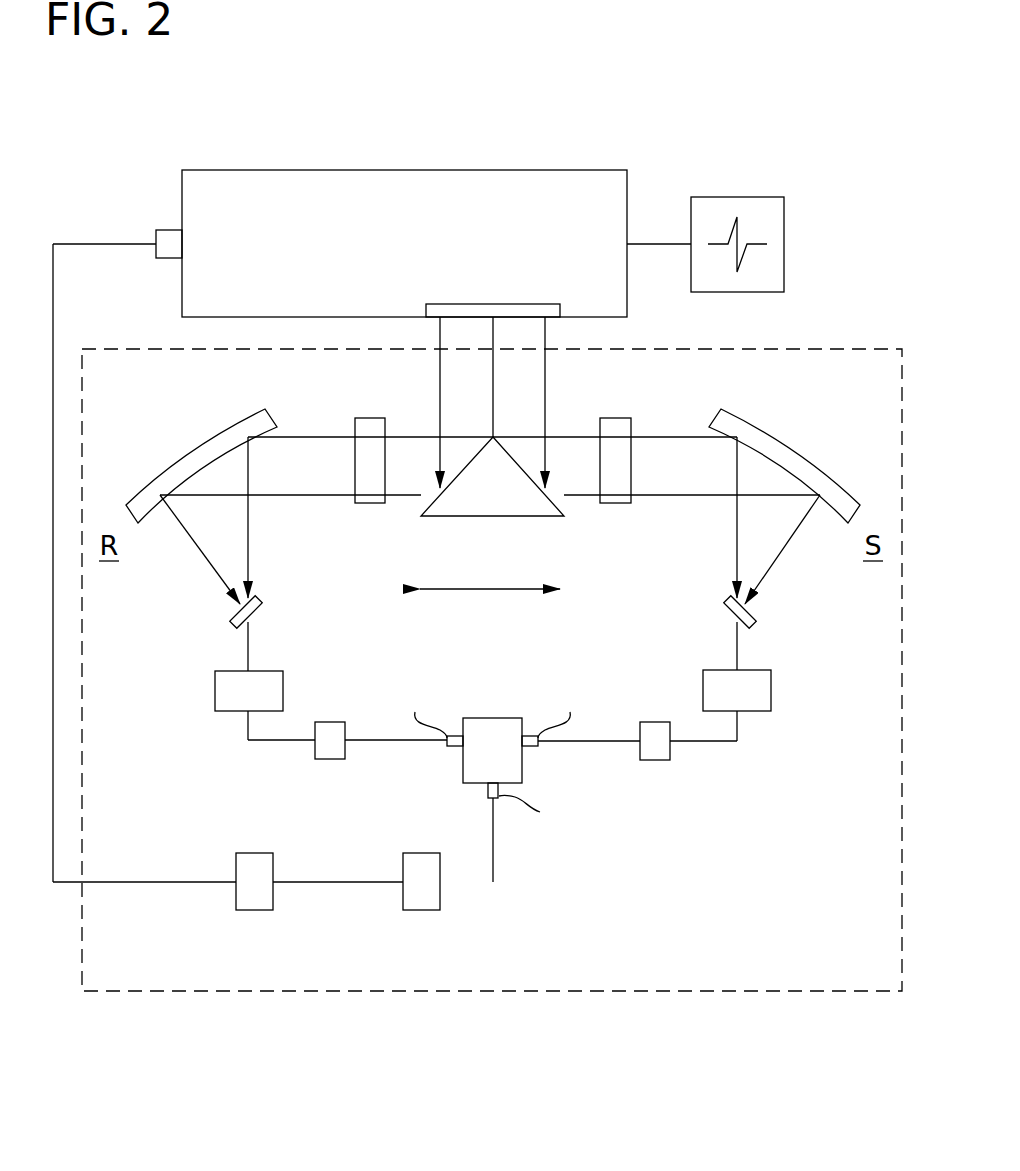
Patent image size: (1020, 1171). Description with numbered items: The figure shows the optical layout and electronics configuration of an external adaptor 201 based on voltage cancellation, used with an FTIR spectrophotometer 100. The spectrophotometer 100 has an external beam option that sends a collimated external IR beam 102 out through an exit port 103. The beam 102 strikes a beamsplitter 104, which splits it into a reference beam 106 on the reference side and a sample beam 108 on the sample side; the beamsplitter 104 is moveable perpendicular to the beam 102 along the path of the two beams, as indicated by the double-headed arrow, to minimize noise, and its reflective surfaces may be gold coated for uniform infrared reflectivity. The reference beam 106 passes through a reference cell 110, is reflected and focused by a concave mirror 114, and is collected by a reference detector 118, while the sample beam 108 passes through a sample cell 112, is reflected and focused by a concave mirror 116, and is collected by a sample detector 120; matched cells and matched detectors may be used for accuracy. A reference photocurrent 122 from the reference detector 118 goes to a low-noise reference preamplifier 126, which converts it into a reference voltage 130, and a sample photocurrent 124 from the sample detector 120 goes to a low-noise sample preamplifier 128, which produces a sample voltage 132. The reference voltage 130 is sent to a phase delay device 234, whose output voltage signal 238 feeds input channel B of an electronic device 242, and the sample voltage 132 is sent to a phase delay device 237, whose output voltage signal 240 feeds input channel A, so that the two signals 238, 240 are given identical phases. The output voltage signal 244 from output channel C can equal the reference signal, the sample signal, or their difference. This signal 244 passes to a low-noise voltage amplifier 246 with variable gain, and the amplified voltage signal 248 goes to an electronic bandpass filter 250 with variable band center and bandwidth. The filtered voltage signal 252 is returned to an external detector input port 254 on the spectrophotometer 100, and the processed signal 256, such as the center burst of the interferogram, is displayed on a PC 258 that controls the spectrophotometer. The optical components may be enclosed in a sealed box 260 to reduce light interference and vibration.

The FTIR spectrophotometer 100 is at (390, 183).
The exit port 103 is at (498, 304).
The external IR beam 102 is at (516, 424).
The beamsplitter 104 is at (470, 508).
The reference beam 106 is at (415, 486).
The sample beam 108 is at (570, 486).
The reference cell 110 is at (366, 418).
The sample cell 112 is at (622, 418).
The concave mirror 114 is at (203, 458).
The concave mirror 116 is at (782, 458).
The reference detector 118 is at (228, 626).
The sample detector 120 is at (760, 626).
The reference photocurrent 122 is at (250, 650).
The sample photocurrent 124 is at (735, 647).
The reference preamplifier 126 is at (215, 690).
The sample preamplifier 128 is at (771, 690).
The reference voltage 130 is at (287, 742).
The sample voltage 132 is at (695, 743).
The phase delay device 234 is at (333, 760).
The phase delay device 237 is at (655, 761).
The output voltage signal 238 is at (380, 740).
The output voltage signal 240 is at (600, 741).
The electronic device 242 is at (463, 762).
The output voltage signal 244 is at (495, 852).
The voltage amplifier 246 is at (421, 911).
The amplified voltage signal 248 is at (341, 883).
The electronic bandpass filter 250 is at (256, 911).
The voltage signal 252 is at (105, 882).
The external detector input port 254 is at (172, 230).
The processed signal 256 is at (641, 244).
The PC 258 is at (784, 216).
The sealed box 260 is at (815, 345).
The external adaptor 201 is at (723, 928).